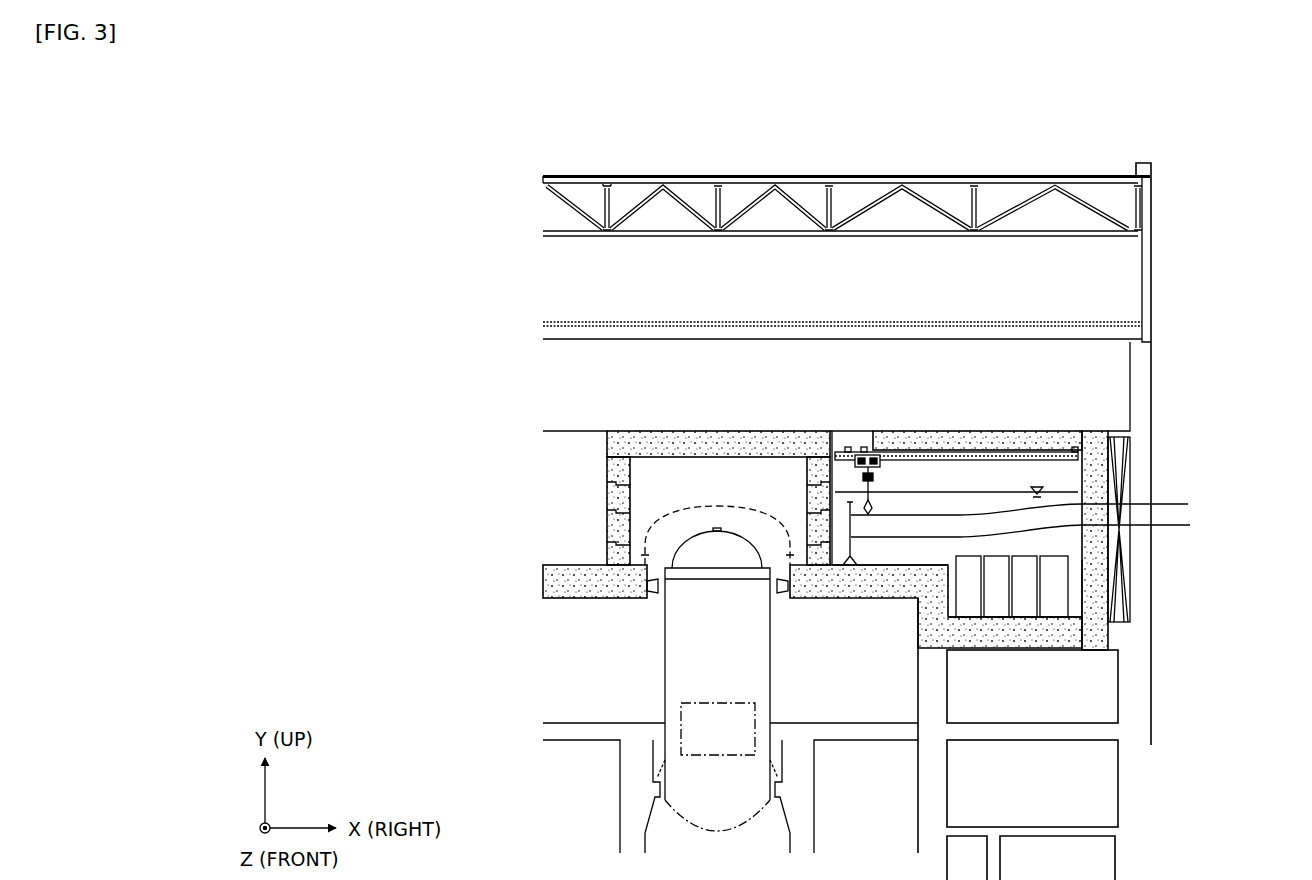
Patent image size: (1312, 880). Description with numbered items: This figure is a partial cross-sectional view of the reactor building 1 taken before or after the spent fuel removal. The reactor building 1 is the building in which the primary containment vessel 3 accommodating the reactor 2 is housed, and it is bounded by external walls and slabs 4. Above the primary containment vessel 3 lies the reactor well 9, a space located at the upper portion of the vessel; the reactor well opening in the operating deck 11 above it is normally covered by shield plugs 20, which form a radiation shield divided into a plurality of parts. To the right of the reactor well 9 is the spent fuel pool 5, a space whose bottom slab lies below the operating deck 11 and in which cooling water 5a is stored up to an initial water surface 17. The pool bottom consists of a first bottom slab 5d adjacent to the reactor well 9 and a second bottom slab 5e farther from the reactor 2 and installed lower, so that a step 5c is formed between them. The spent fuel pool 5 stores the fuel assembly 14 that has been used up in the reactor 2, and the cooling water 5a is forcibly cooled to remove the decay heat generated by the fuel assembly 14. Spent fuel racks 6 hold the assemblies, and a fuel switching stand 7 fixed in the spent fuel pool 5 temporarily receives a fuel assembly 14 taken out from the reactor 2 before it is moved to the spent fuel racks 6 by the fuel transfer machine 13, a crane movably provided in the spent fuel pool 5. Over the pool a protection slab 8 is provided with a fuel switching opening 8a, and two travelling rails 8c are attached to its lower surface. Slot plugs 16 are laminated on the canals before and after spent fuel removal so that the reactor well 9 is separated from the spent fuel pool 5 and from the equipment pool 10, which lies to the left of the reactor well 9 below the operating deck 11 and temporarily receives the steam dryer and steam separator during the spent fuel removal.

The reactor building 1 is at (1114, 131).
The reactor 2 is at (683, 714).
The primary containment vessel 3 is at (665, 655).
The external walls and slabs 4 is at (1151, 270).
The spent fuel pool 5 is at (1012, 475).
The cooling water 5a is at (1073, 568).
The step 5c is at (950, 599).
The first bottom slab 5d is at (876, 558).
The second bottom slab 5e is at (1075, 613).
The spent fuel racks 6 is at (1060, 583).
The fuel switching stand 7 is at (1024, 533).
The protection slab 8 is at (950, 441).
The fuel switching opening 8a is at (864, 439).
The travelling rails 8c is at (997, 457).
The reactor well 9 is at (755, 482).
The equipment pool 10 is at (553, 543).
The operating deck 11 is at (563, 427).
The fuel transfer machine 13 is at (880, 482).
The fuel assembly 14 is at (1033, 505).
The slot plugs 16 is at (617, 440).
The initial water surface 17 is at (1047, 486).
The shield plugs 20 is at (718, 443).